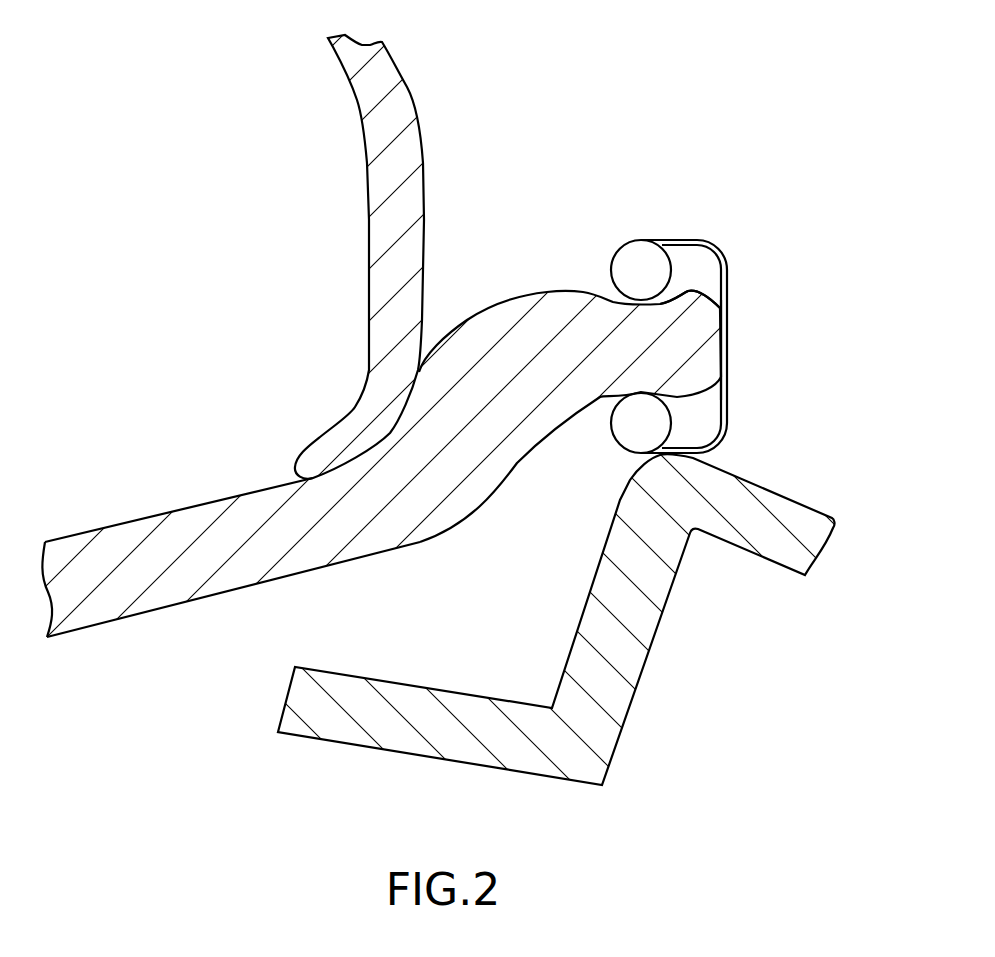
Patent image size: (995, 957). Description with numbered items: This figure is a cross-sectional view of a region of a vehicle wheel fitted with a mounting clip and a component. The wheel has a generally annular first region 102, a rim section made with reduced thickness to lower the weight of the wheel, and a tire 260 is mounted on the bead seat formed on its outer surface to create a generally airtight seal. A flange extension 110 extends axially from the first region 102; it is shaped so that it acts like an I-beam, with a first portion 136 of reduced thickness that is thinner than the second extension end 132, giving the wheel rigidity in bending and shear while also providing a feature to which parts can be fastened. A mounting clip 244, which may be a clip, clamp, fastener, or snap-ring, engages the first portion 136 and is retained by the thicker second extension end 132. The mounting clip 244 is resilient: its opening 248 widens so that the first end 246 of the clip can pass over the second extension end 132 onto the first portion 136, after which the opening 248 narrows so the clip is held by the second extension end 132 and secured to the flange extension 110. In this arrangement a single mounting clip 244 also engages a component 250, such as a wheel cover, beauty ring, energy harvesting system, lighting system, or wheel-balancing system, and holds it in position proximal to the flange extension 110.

The first region 102 is at (173, 527).
The flange extension 110 is at (643, 352).
The second extension end 132 is at (727, 322).
The first portion 136 is at (633, 340).
The mounting clip 244 is at (727, 357).
The first end 246 is at (642, 268).
The opening 248 is at (652, 322).
The component 250 is at (758, 497).
The tire 260 is at (400, 145).